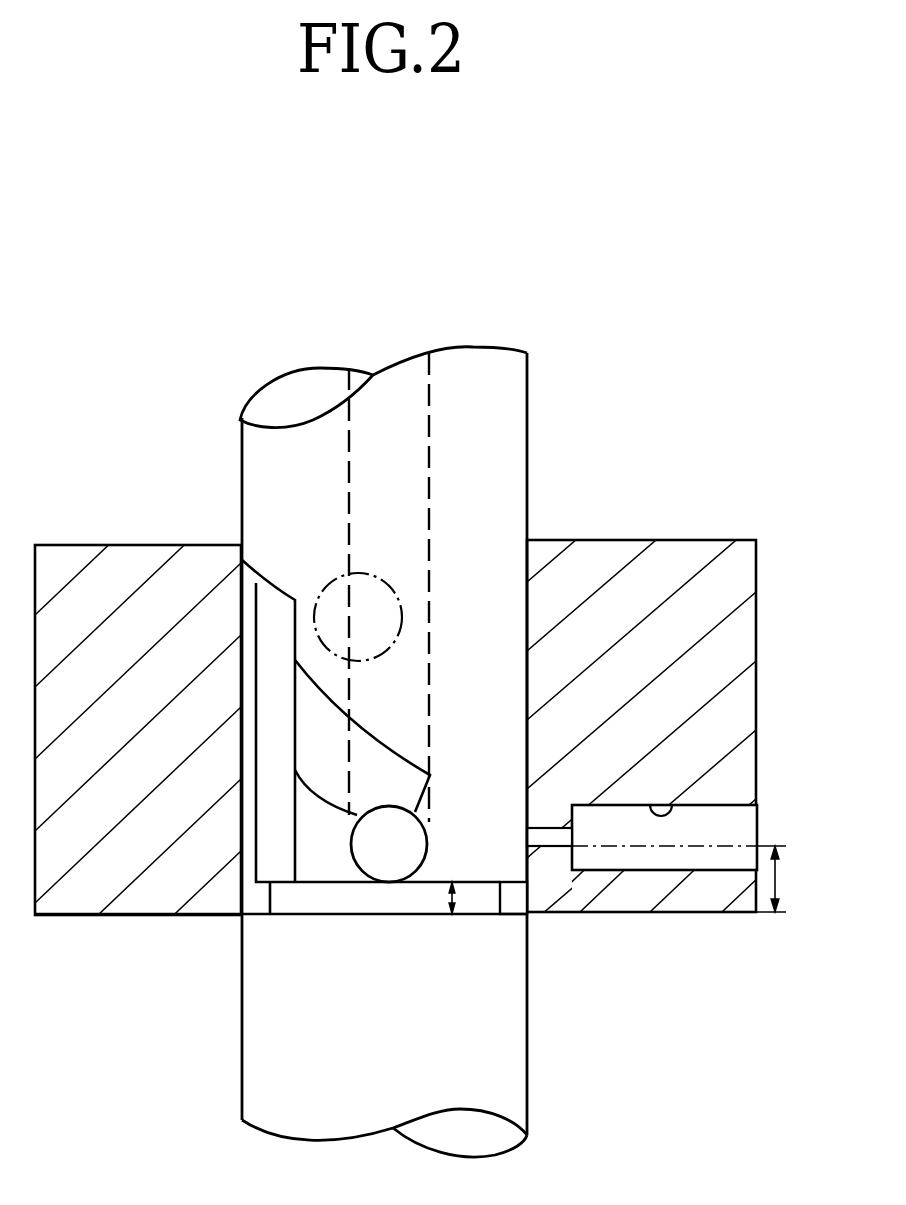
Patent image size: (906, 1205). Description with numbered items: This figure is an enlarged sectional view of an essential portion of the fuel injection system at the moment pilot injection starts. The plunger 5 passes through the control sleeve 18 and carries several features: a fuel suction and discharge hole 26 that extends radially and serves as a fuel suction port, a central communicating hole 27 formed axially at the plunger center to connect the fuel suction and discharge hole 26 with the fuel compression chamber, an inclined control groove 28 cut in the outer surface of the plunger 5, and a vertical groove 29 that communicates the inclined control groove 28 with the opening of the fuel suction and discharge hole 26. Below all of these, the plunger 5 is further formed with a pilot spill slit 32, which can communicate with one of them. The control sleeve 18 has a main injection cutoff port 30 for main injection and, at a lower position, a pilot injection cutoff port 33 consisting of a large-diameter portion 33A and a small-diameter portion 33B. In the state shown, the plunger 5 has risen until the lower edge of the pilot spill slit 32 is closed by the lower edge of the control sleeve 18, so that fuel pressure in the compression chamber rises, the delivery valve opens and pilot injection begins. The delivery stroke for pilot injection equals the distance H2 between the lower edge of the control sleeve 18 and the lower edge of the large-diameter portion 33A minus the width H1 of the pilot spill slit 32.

The plunger 5 is at (508, 362).
The control sleeve 18 is at (113, 915).
The fuel suction and discharge hole 26 is at (383, 857).
The central communicating hole 27 is at (397, 385).
The inclined control groove 28 is at (323, 704).
The vertical groove 29 is at (272, 648).
The main injection cutoff port 30 is at (337, 590).
The pilot spill slit 32 is at (515, 898).
The pilot injection cutoff port 33 is at (642, 625).
The large-diameter portion 33A is at (662, 810).
The small-diameter portion 33B is at (556, 837).
The width of the pilot spill slit H1 is at (450, 900).
The distance between the lower edge of the control sleeve and the lower edge of the H2 is at (778, 873).